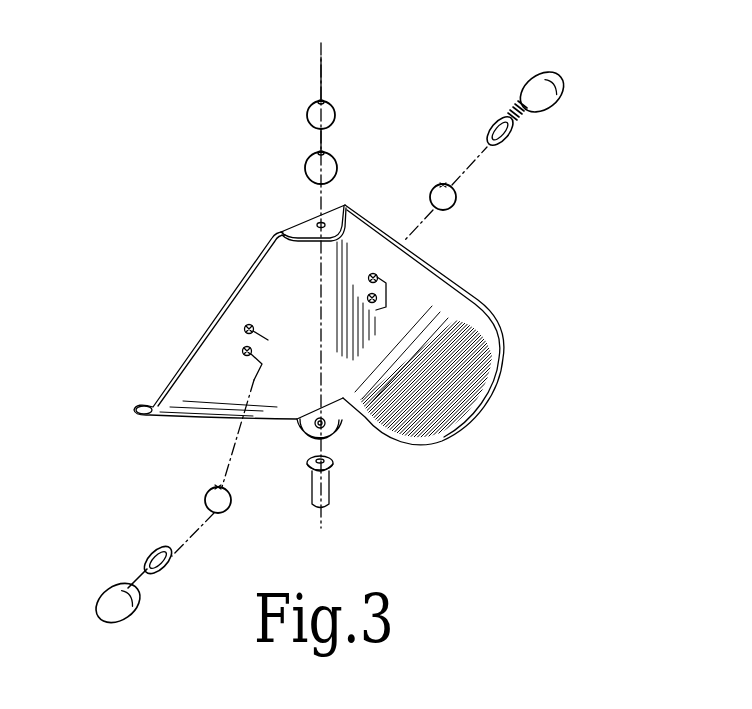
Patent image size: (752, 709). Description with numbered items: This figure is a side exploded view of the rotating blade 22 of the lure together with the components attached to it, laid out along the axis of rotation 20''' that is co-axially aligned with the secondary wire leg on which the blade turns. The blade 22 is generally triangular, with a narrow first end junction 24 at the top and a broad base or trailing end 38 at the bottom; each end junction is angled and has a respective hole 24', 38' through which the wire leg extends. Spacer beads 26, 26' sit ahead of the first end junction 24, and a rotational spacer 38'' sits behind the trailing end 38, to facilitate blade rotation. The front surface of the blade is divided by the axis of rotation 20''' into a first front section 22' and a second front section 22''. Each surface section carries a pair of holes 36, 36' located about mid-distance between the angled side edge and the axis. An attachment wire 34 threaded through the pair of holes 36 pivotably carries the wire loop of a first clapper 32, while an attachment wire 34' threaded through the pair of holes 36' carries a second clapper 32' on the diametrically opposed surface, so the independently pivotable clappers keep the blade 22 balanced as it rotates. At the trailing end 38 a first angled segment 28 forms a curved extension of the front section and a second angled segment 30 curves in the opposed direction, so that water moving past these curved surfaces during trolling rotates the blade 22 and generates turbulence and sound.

The axis of rotation 20''' is at (289, 272).
The blade 22 is at (303, 325).
The first front section 22' is at (433, 323).
The second front section 22'' is at (221, 313).
The first end junction 24 is at (357, 203).
The hole 24' is at (294, 200).
The bead 26 is at (355, 104).
The bead 26' is at (366, 162).
The first angled segment 28 is at (463, 372).
The second angled segment 30 is at (141, 406).
The first clapper 32 is at (112, 586).
The second clapper 32' is at (563, 107).
The attachment wire 34 is at (190, 468).
The attachment wire 34' is at (485, 193).
The pair of holes 36 is at (275, 334).
The pair of holes 36' is at (372, 273).
The trailing end 38 is at (346, 450).
The hole 38' is at (288, 451).
The rotational spacer 38'' is at (362, 494).